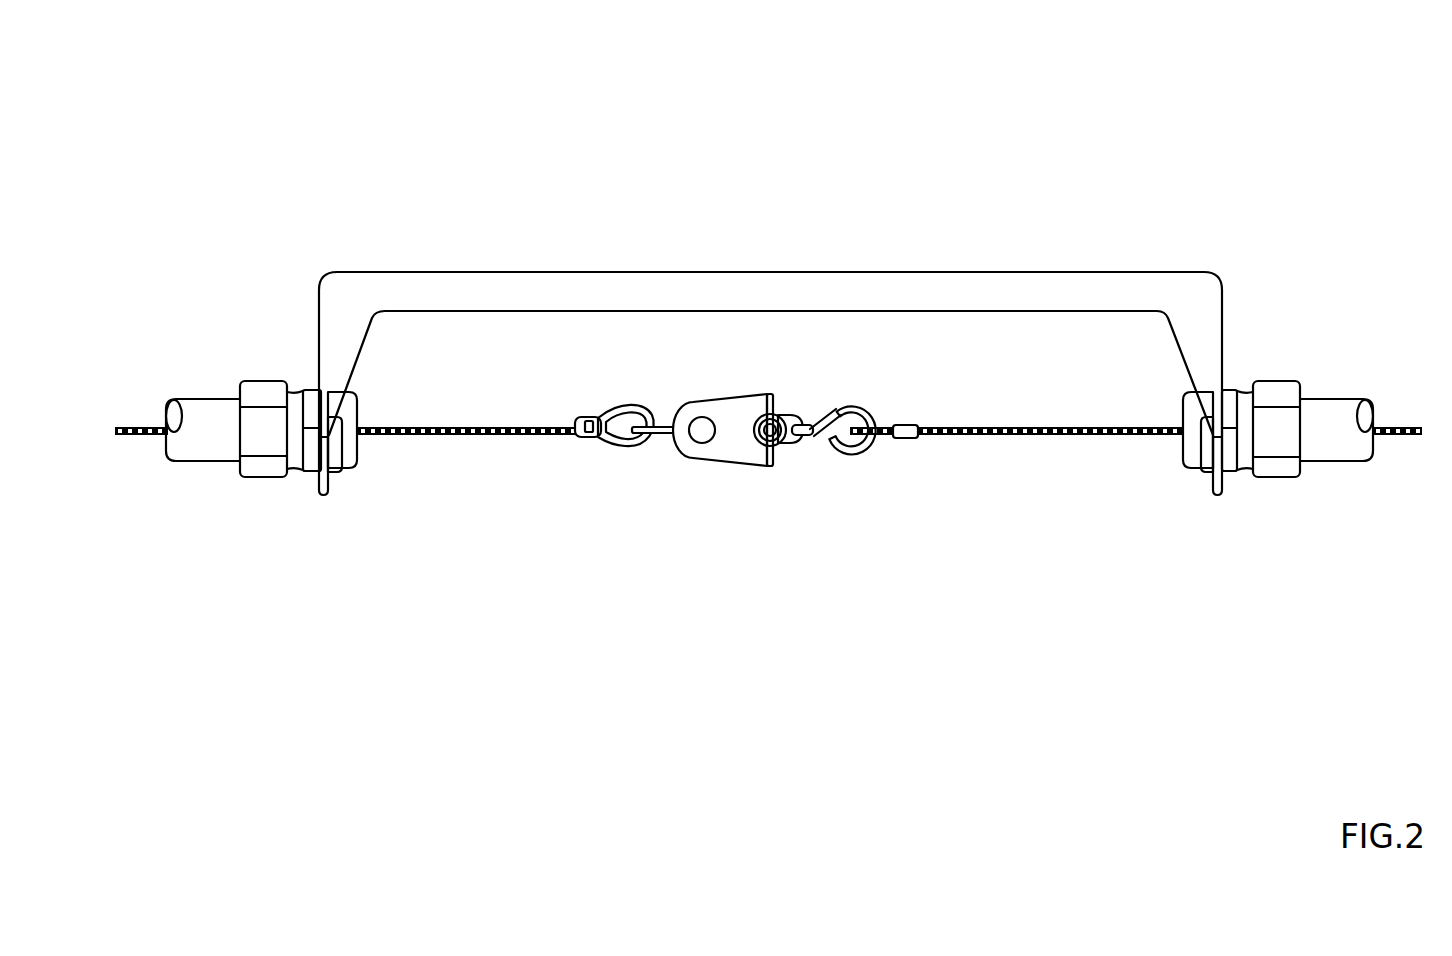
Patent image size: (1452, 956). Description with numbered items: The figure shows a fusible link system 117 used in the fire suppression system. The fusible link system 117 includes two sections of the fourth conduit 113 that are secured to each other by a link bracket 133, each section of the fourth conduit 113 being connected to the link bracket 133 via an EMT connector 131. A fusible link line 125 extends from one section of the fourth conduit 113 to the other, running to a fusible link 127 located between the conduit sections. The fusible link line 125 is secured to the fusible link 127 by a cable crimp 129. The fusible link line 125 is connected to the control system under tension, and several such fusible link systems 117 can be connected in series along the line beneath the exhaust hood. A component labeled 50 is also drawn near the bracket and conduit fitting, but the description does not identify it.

The fusible link system 117 is at (505, 153).
The link bracket 133 is at (918, 272).
The fourth conduit 113 is at (202, 402).
The EMT connector 131 is at (1297, 380).
The bulkhead fitting collar 50 is at (372, 460).
The fusible link line 125 is at (432, 428).
The fusible link 127 is at (693, 457).
The cable crimp 129 is at (920, 440).